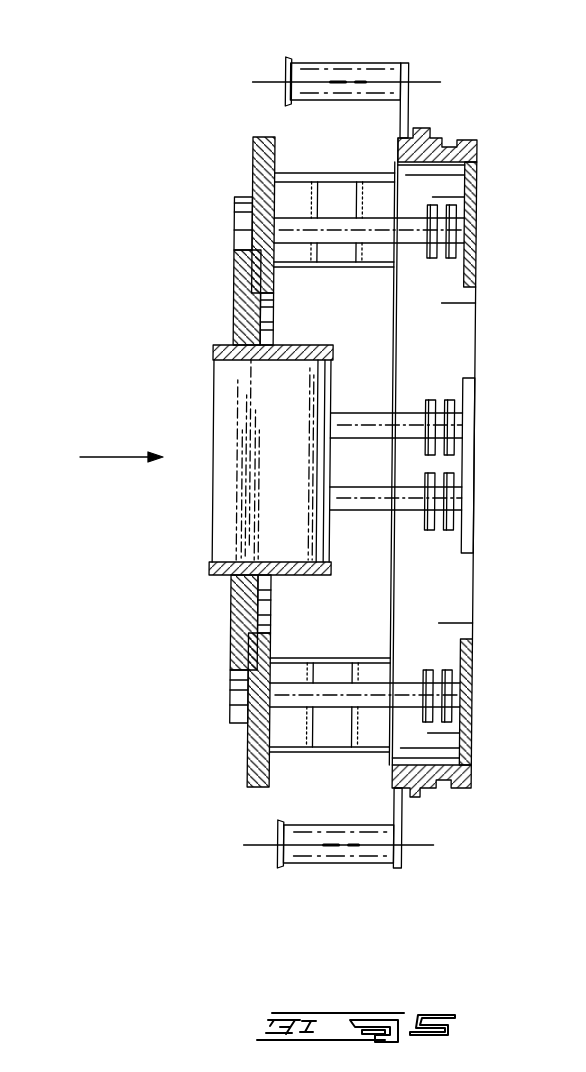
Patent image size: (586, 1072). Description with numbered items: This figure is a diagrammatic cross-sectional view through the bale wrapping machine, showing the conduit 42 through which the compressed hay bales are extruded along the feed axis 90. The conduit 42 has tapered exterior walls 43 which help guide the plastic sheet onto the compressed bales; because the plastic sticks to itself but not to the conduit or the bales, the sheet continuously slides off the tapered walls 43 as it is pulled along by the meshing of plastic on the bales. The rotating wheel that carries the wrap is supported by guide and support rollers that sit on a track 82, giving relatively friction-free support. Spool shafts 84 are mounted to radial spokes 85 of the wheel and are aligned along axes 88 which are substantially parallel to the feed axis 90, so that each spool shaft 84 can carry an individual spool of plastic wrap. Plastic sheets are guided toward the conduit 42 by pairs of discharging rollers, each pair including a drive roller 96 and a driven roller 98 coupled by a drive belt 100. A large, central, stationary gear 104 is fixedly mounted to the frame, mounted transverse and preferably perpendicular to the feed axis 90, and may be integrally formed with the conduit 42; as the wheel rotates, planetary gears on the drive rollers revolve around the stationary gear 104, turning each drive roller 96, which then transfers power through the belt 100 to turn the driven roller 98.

The conduit 42 is at (240, 362).
The tapered exterior walls 43 is at (305, 347).
The track 82 is at (443, 791).
The spool shafts 84 is at (343, 70).
The radial spokes 85 is at (408, 113).
The axes 88 is at (271, 81).
The feed axis 90 is at (110, 458).
The drive roller 96 is at (378, 430).
The driven roller 98 is at (362, 498).
The drive belt 100 is at (447, 461).
The stationary gear 104 is at (236, 287).